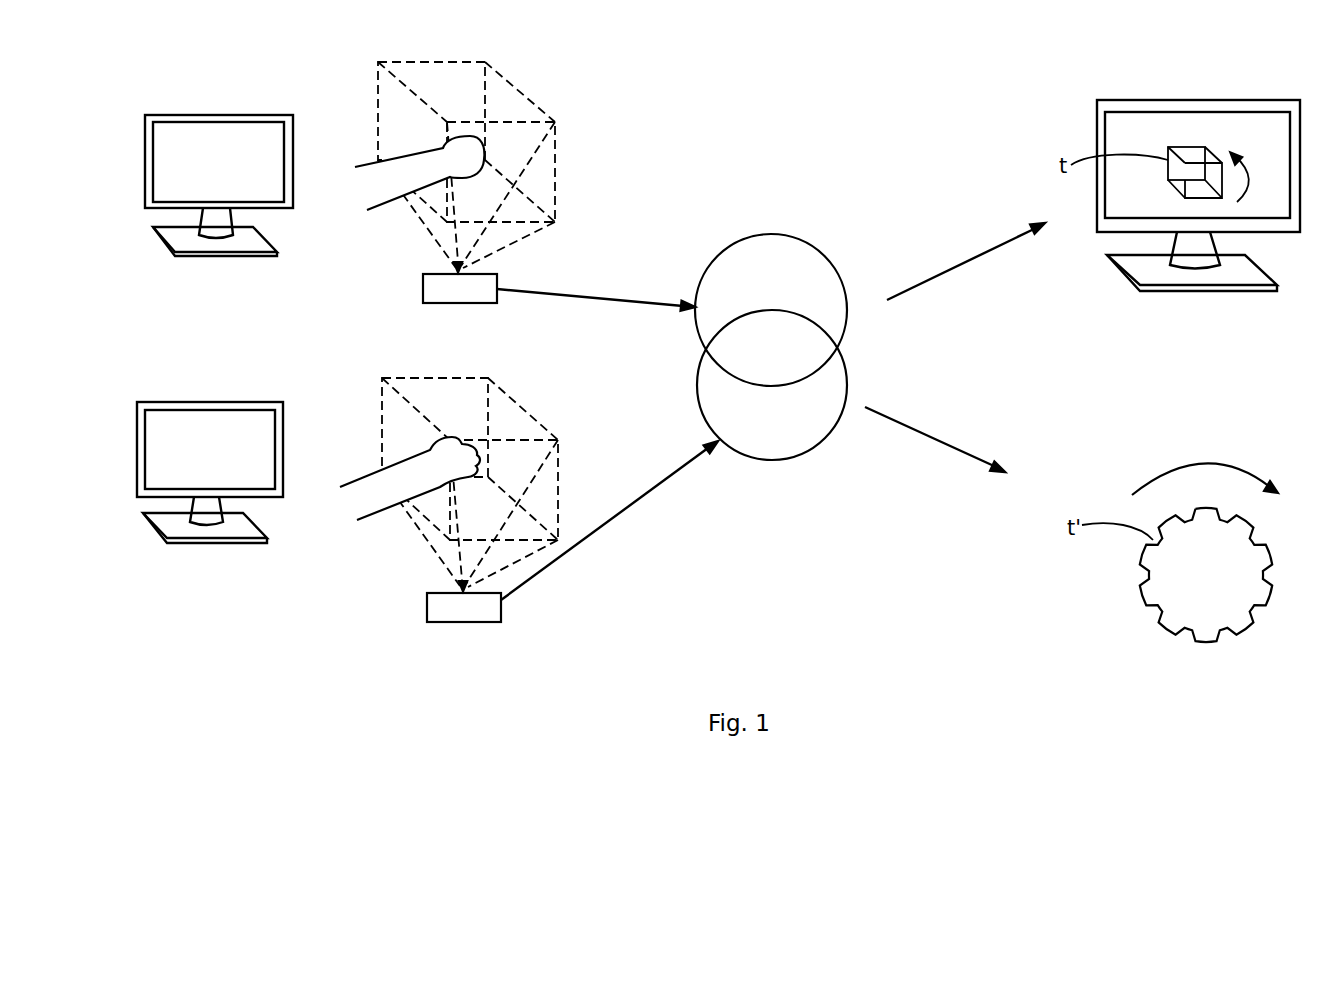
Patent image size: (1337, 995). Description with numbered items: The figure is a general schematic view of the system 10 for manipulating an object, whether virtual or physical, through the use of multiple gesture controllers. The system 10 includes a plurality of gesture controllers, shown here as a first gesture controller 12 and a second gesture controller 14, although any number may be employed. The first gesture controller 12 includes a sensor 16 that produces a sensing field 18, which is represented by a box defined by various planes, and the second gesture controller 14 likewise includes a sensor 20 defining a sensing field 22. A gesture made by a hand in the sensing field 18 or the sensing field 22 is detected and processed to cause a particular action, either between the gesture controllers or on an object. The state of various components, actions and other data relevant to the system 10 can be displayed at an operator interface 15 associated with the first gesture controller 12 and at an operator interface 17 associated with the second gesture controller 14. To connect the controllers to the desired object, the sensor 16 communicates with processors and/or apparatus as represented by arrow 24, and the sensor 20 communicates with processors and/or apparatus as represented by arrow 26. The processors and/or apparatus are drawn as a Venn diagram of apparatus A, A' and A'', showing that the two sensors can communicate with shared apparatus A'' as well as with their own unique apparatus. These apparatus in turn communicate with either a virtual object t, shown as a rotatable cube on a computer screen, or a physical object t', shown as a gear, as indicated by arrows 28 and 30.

The system 10 is at (710, 538).
The first gesture controller 12 is at (541, 252).
The second gesture controller 14 is at (411, 566).
The operator interface 15 is at (218, 115).
The sensor 16 is at (473, 303).
The operator interface 17 is at (210, 402).
The sensing field 18 is at (535, 102).
The sensor 20 is at (473, 622).
The sensing field 22 is at (517, 403).
The arrow 24 is at (638, 307).
The arrow 26 is at (643, 503).
The arrow 28 is at (977, 253).
The arrow 30 is at (948, 448).